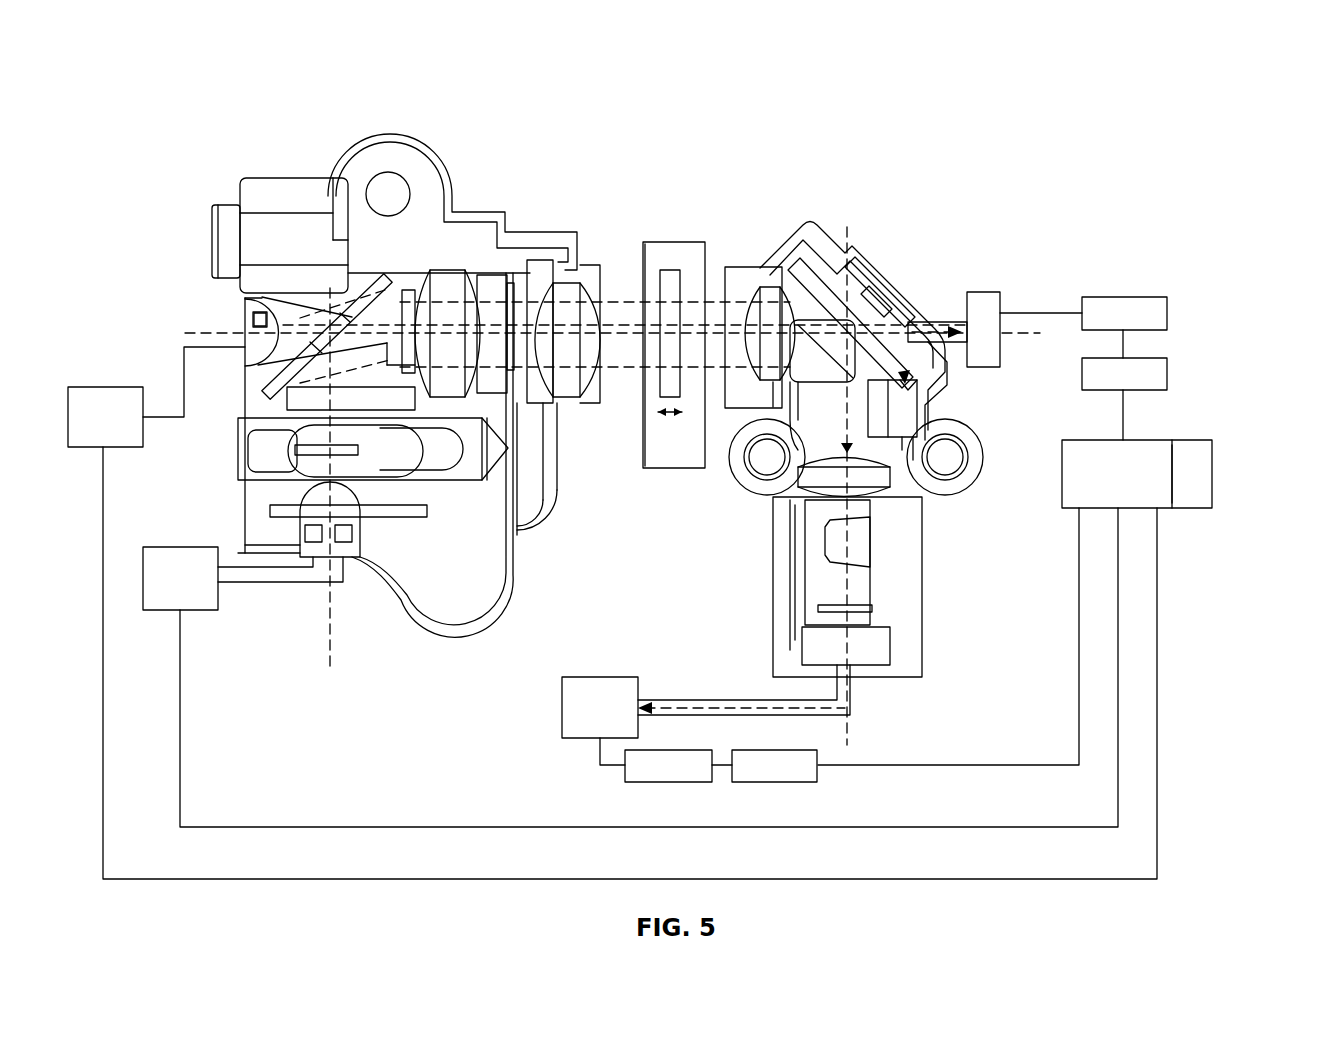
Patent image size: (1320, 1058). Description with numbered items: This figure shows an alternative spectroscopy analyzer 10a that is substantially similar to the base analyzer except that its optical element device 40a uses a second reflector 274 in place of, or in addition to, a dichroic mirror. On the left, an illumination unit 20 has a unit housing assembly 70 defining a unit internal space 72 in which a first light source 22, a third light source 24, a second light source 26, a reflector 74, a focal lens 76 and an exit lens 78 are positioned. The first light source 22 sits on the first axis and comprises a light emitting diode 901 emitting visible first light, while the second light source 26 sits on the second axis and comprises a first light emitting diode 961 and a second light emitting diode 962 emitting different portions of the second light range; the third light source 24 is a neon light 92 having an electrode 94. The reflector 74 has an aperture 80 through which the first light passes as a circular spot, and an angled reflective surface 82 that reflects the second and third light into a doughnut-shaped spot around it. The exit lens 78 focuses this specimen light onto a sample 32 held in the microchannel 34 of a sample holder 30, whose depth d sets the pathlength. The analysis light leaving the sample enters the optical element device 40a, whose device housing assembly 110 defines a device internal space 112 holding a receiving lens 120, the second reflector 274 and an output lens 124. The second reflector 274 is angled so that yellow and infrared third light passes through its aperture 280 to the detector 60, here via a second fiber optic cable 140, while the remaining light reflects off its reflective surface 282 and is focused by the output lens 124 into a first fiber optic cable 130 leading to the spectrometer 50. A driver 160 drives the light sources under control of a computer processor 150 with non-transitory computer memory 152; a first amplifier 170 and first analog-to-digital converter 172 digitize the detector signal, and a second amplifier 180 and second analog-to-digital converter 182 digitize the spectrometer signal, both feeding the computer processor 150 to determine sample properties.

The spectroscopy analyzer 10a is at (1193, 93).
The illumination unit 20 is at (268, 174).
The first light source 22 is at (257, 312).
The third light source 24 is at (288, 467).
The second light source 26 is at (352, 560).
The sample holder 30 is at (657, 240).
The sample 32 is at (663, 292).
The microchannel 34 is at (667, 270).
The optical element device 40a is at (868, 246).
The spectrometer 50 is at (598, 676).
The detector 60 is at (988, 292).
The unit housing assembly 70 is at (488, 202).
The unit internal space 72 is at (294, 235).
The reflector 74 is at (260, 390).
The focal lens 76 is at (453, 280).
The exit lens 78 is at (577, 277).
The aperture 80 is at (267, 363).
The reflective surface 82 is at (252, 440).
The light emitting diode 901 is at (252, 315).
The neon light 92 is at (413, 470).
The electrode 94 is at (358, 449).
The first light emitting diode 961 is at (313, 548).
The second light emitting diode 962 is at (358, 530).
The device housing assembly 110 is at (820, 228).
The device internal space 112 is at (953, 500).
The receiving lens 120 is at (763, 300).
The output lens 124 is at (805, 480).
The first fiber optic cable 130 is at (750, 698).
The second fiber optic cable 140 is at (947, 345).
The computer processor 150 is at (1092, 440).
The non-transitory computer memory 152 is at (1212, 478).
The driver 160 is at (105, 387).
The first amplifier 170 is at (1127, 297).
The first analog-to-digital converter 172 is at (1168, 375).
The second amplifier 180 is at (667, 783).
The second analog-to-digital converter 182 is at (750, 783).
The second reflector 274 is at (880, 267).
The aperture 280 is at (908, 288).
The reflective surface 282 is at (763, 272).